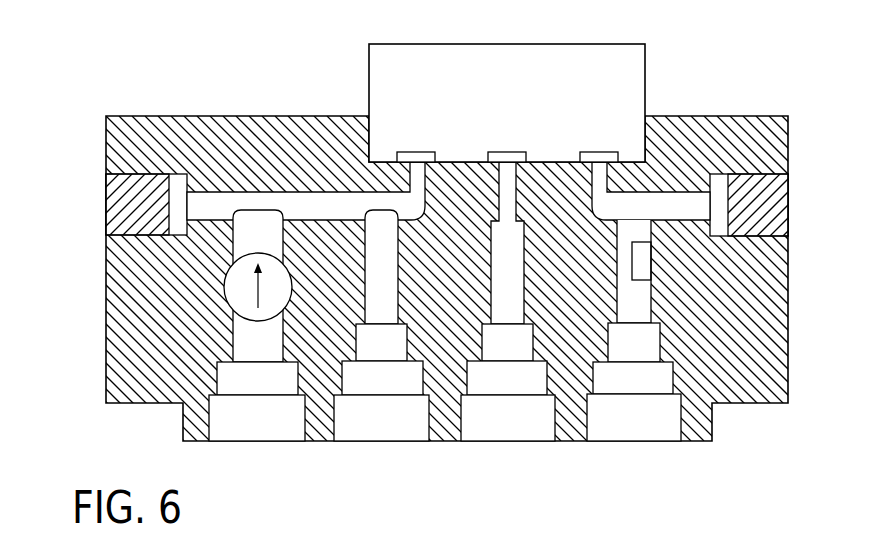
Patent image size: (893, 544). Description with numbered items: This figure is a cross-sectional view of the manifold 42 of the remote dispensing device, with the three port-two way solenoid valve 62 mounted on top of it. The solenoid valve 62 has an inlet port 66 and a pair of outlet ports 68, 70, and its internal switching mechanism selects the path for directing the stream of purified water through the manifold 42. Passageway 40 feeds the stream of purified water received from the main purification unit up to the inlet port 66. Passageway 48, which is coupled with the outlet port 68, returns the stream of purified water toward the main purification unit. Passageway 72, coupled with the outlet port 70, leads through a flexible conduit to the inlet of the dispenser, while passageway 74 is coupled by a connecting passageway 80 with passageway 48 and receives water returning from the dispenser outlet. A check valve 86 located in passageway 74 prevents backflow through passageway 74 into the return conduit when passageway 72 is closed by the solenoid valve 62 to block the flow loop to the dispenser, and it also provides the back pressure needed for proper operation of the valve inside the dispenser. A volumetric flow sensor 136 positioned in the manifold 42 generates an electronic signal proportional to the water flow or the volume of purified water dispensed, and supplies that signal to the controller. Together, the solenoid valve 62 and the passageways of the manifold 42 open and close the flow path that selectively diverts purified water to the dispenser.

The manifold 42 is at (104, 283).
The solenoid valve 62 is at (368, 63).
The outlet port 68 is at (415, 152).
The inlet port 66 is at (505, 152).
The outlet port 70 is at (596, 152).
The connecting passageway 80 is at (305, 197).
The check valve 86 is at (225, 278).
The passageway 74 is at (245, 342).
The passageway 48 is at (393, 274).
The passageway 40 is at (515, 282).
The passageway 72 is at (635, 297).
The volumetric flow sensor 136 is at (652, 258).